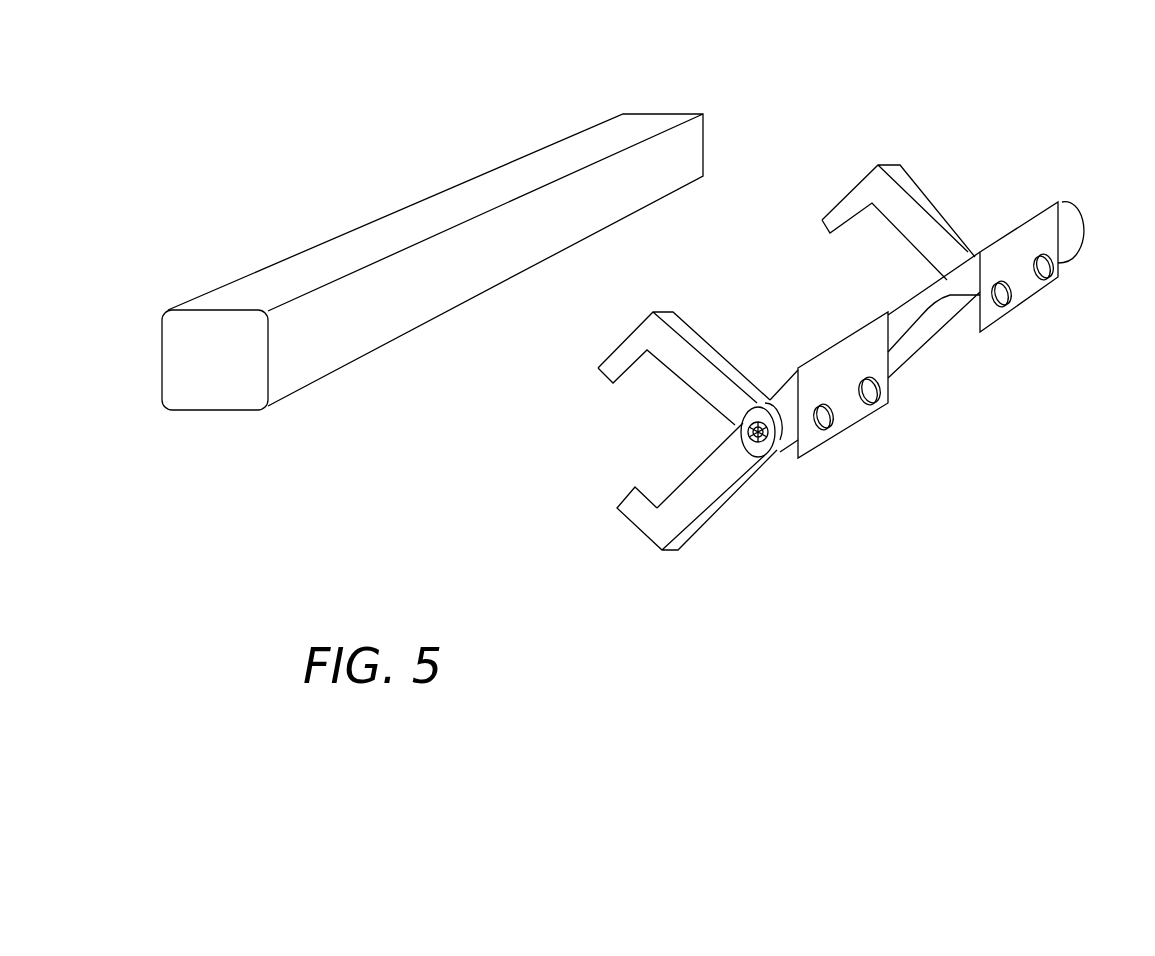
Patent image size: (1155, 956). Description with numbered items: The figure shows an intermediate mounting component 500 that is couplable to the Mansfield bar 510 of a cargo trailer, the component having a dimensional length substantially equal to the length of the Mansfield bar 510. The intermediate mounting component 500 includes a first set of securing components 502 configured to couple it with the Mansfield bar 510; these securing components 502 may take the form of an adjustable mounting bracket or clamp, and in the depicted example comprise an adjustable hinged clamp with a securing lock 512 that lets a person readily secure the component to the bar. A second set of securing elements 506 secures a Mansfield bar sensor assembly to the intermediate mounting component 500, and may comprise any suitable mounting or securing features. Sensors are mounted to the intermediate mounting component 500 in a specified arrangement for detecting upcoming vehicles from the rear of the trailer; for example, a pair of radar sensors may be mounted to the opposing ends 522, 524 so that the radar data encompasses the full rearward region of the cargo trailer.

The intermediate mounting component 500 is at (828, 638).
The first set of securing components 502 is at (650, 437).
The second set of securing elements 506 is at (1055, 272).
The Mansfield bar 510 is at (153, 283).
The securing lock 512 is at (779, 455).
The opposing end 522 is at (748, 371).
The opposing end 524 is at (1055, 190).